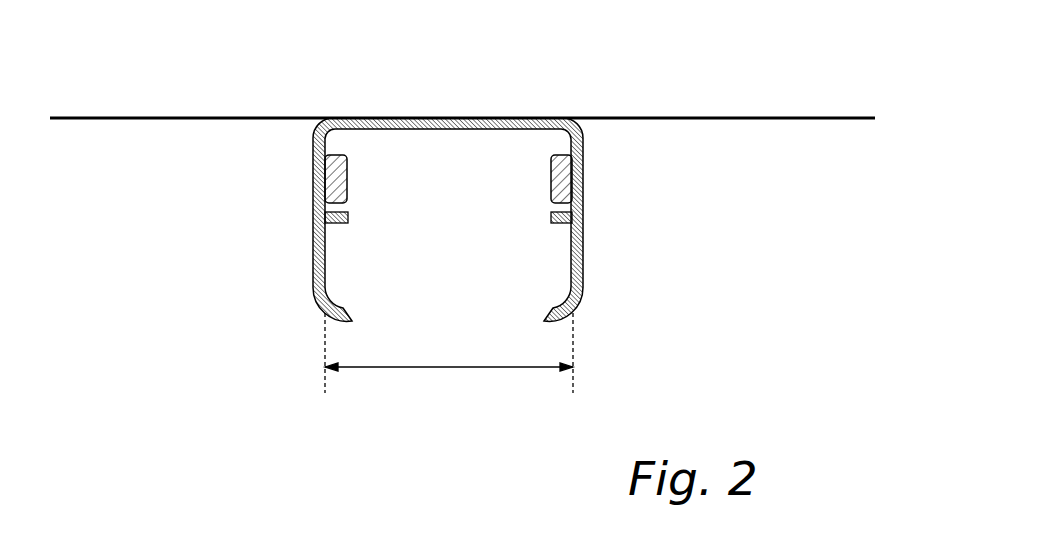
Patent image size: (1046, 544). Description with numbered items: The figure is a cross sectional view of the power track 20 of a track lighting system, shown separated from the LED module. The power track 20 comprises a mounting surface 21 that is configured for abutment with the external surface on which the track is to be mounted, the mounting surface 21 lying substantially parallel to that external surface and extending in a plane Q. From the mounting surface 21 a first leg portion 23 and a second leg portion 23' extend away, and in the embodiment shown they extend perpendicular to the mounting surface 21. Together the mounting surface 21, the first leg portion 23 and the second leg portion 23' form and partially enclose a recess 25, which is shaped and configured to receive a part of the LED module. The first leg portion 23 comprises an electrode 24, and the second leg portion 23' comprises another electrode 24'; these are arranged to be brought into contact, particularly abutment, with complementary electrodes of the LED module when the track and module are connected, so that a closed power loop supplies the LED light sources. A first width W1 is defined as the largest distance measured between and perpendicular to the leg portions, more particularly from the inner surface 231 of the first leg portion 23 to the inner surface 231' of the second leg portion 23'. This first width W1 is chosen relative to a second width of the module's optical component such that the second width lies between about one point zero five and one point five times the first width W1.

The plane Q is at (715, 117).
The power track 20 is at (139, 188).
The mounting surface 21 is at (454, 130).
The first leg portion 23 is at (284, 290).
The second leg portion 23' is at (615, 288).
The electrode 24 is at (291, 194).
The electrode 24' is at (614, 198).
The recess 25 is at (471, 231).
The inner surface 231 is at (376, 263).
The inner surface 231' is at (521, 263).
The first width W1 is at (449, 353).